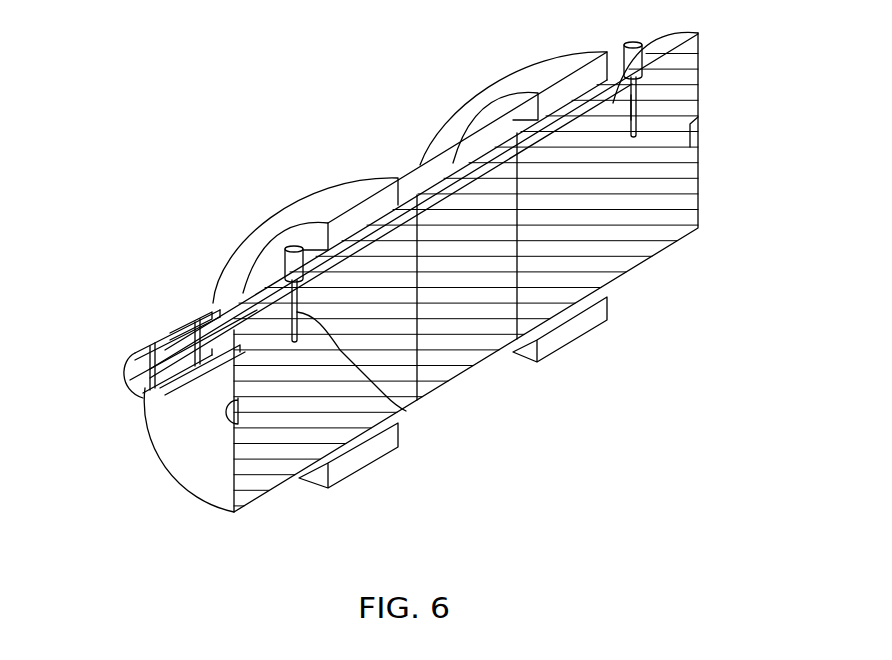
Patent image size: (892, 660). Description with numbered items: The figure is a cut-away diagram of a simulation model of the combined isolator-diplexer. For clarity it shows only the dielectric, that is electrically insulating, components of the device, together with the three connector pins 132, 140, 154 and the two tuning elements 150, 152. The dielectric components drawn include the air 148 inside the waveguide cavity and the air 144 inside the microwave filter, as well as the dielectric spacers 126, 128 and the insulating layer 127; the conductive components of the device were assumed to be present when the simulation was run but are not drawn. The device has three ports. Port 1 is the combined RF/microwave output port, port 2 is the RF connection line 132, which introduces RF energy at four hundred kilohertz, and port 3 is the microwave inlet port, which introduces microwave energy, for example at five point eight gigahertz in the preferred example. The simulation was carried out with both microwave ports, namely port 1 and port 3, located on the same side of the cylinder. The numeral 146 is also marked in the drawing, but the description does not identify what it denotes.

The port 1 is at (294, 248).
The port 2 is at (126, 373).
The port 3 is at (630, 44).
The dielectric spacer 126 is at (568, 330).
The insulating layer 127 is at (416, 172).
The dielectric spacer 128 is at (373, 452).
The RF connection line 132 is at (272, 305).
The connector pin 140 is at (406, 411).
The air inside the microwave filter 144 is at (167, 333).
The lower conductor 146 is at (140, 392).
The air inside the waveguide cavity 148 is at (445, 345).
The tuning element 150 is at (227, 412).
The tuning element 152 is at (700, 142).
The connector pin 154 is at (637, 110).